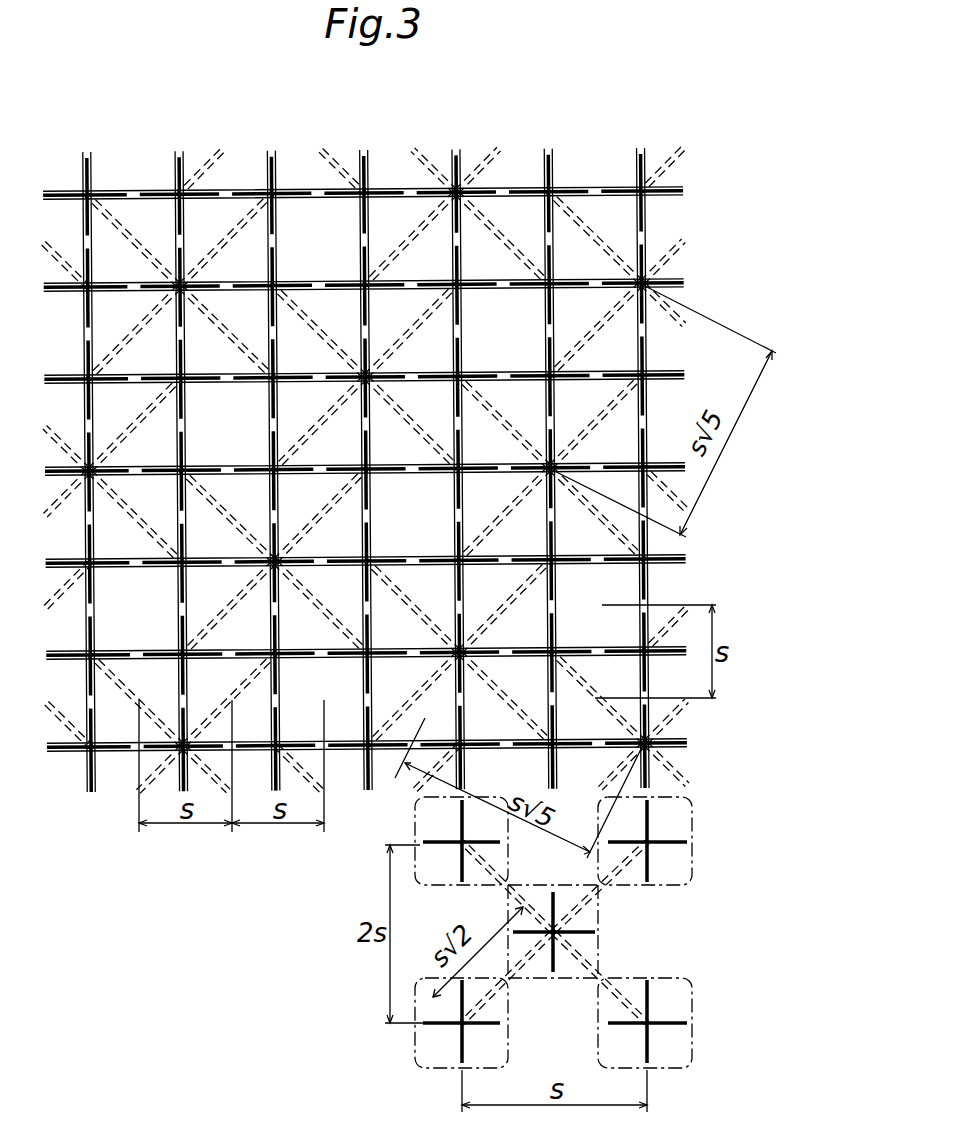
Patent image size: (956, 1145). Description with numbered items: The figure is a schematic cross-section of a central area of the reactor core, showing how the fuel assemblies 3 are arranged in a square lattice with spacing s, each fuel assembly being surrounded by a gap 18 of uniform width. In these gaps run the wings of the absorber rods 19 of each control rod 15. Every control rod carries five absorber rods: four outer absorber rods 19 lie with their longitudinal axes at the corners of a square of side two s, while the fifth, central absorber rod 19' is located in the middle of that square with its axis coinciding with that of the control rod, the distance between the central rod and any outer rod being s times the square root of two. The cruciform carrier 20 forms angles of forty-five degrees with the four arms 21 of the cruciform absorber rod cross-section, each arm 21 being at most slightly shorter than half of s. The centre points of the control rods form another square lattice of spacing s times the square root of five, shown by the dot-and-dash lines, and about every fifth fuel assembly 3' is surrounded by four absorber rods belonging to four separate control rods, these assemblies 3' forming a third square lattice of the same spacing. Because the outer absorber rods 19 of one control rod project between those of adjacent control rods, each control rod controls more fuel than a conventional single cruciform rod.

The fuel assembly 3 is at (378, 455).
The fuel assembly surrounded by absorber rods of four separate control rods 3' is at (366, 410).
The control rod 15 is at (490, 911).
The gap 18 is at (82, 154).
The absorber rod 19 is at (509, 654).
The central absorber rod 19' is at (522, 655).
The cruciform carrier 20 is at (330, 328).
The arm 21 is at (466, 1018).